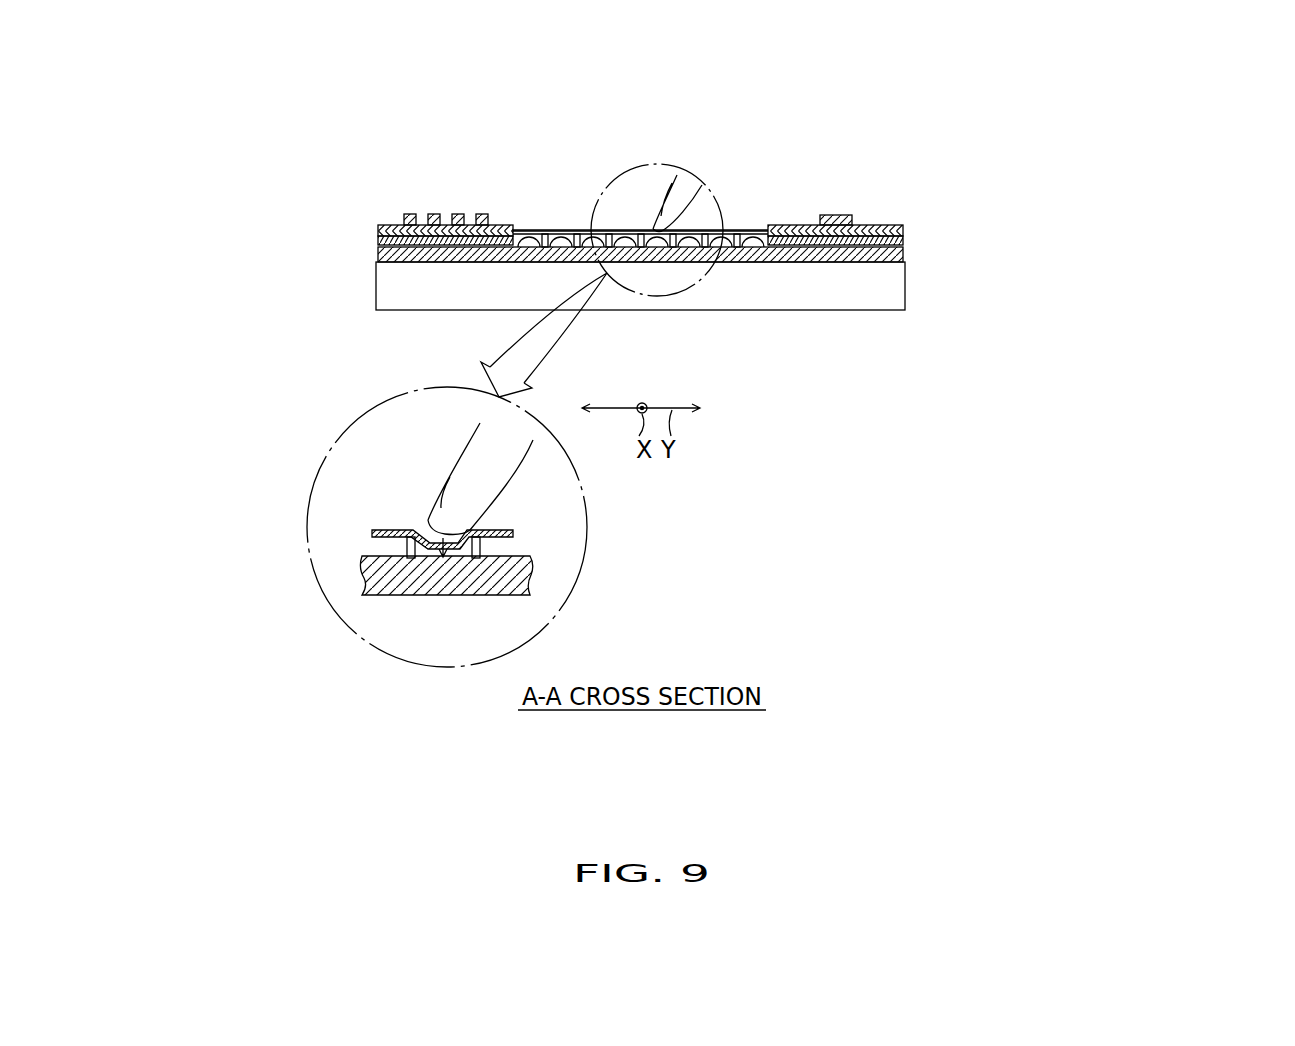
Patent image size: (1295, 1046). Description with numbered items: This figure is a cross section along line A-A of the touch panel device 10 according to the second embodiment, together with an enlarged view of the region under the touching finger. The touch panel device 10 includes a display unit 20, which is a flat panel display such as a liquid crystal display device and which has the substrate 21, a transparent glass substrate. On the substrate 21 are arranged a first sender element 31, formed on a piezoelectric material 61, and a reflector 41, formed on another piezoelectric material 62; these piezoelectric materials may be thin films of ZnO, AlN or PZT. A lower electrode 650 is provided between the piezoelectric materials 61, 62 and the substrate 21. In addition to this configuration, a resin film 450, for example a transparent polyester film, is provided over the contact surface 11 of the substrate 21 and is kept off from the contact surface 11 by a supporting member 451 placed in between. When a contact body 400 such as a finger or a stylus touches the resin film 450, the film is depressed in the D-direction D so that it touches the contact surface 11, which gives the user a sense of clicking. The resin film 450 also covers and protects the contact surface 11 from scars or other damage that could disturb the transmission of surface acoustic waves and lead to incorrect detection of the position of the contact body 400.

The touch panel device 10 is at (842, 50).
The display unit 20 is at (910, 247).
The substrate 21 is at (380, 255).
The lower electrode 650 is at (380, 241).
The piezoelectric material 61 is at (380, 228).
The piezoelectric material 62 is at (903, 228).
The first sender element 31 is at (490, 206).
The reflector 41 is at (836, 215).
The resin film 450 is at (745, 230).
The contact surface 11 is at (652, 245).
The supporting member 451 is at (478, 560).
The contact body 400 is at (675, 172).
The D-direction D is at (480, 546).